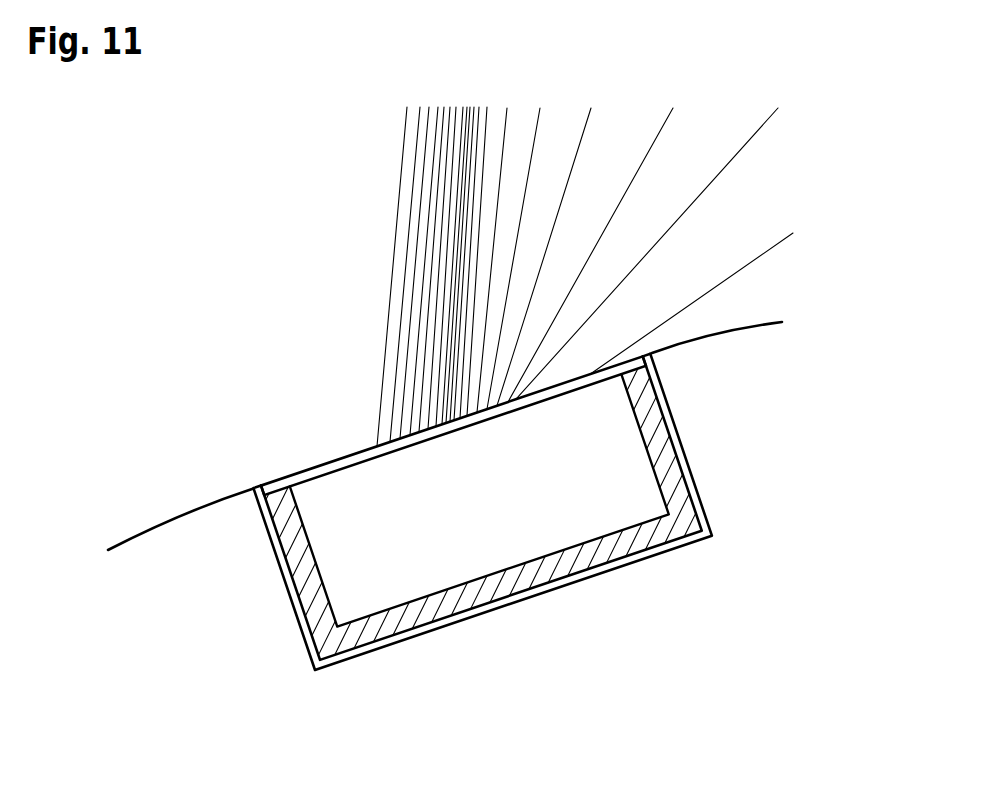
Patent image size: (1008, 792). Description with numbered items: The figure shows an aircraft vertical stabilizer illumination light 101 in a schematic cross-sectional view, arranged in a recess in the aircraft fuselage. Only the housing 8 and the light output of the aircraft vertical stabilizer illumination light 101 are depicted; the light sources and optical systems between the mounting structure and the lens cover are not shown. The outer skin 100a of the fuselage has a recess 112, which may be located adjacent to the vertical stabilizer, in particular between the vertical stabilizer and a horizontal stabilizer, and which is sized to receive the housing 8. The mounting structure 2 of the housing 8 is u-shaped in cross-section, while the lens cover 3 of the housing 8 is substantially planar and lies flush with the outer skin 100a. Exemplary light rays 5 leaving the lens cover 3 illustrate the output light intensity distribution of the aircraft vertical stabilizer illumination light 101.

The aircraft vertical stabilizer illumination light 101 is at (423, 450).
The outer skin 100a is at (158, 525).
The housing 8 is at (425, 507).
The lens cover 3 is at (275, 493).
The mounting structure 2 is at (297, 556).
The recess 112 is at (519, 602).
The light rays 5 is at (641, 257).